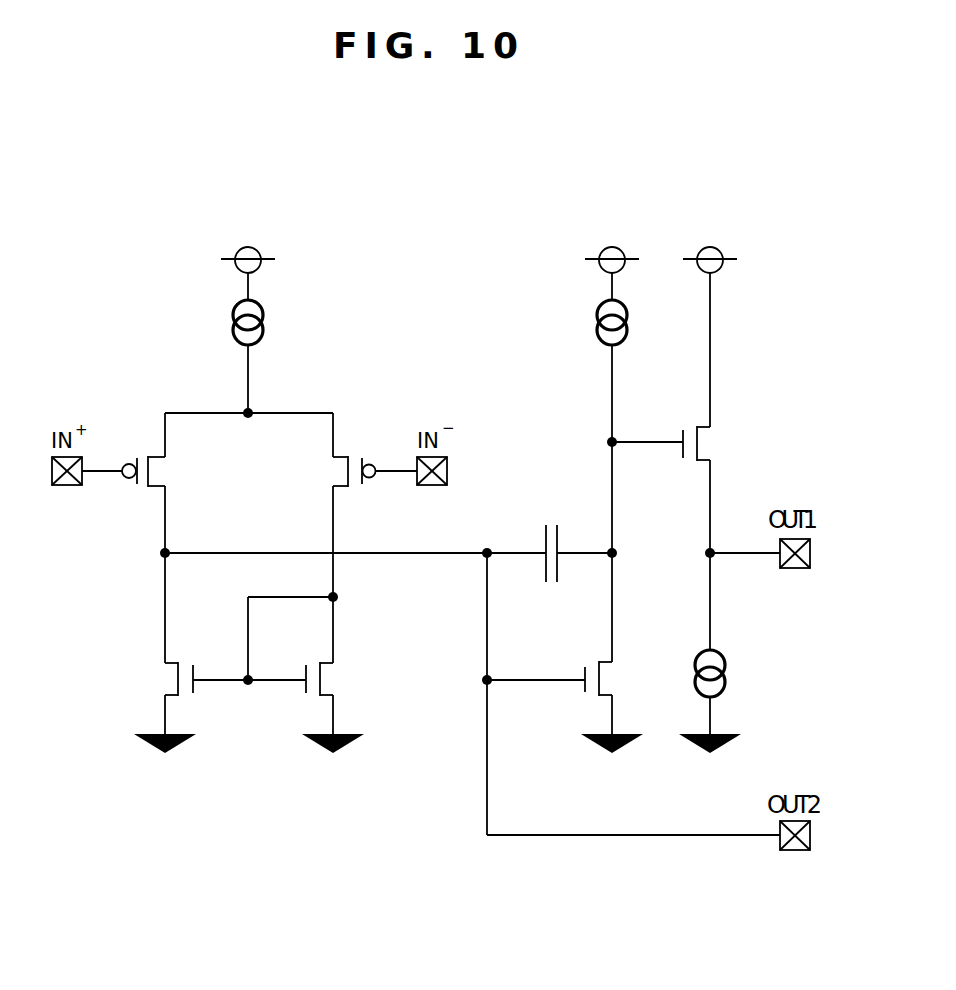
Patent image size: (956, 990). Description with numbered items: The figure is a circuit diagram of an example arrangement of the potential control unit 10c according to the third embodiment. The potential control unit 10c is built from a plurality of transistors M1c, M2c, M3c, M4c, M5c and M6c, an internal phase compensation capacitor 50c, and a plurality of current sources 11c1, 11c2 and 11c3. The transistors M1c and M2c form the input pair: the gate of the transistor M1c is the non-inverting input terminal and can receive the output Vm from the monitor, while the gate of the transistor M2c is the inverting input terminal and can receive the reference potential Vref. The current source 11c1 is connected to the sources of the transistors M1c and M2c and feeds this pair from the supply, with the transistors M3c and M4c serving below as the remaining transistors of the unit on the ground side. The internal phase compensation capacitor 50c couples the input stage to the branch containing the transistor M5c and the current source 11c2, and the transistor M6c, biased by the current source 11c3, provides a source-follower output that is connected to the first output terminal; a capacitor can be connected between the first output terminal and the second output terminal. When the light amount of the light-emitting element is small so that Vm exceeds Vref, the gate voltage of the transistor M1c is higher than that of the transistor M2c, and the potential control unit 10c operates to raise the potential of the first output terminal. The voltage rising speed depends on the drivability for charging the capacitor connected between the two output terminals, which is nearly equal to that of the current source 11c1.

The potential control unit 10c is at (434, 202).
The current source 11c1 is at (233, 310).
The current source 11c2 is at (597, 310).
The current source 11c3 is at (726, 657).
The transistor M1c is at (167, 471).
The transistor M2c is at (353, 447).
The transistor M3c is at (338, 680).
The transistor M4c is at (160, 678).
The transistor M5c is at (595, 660).
The transistor M6c is at (717, 440).
The internal phase compensation capacitor 50c is at (548, 522).